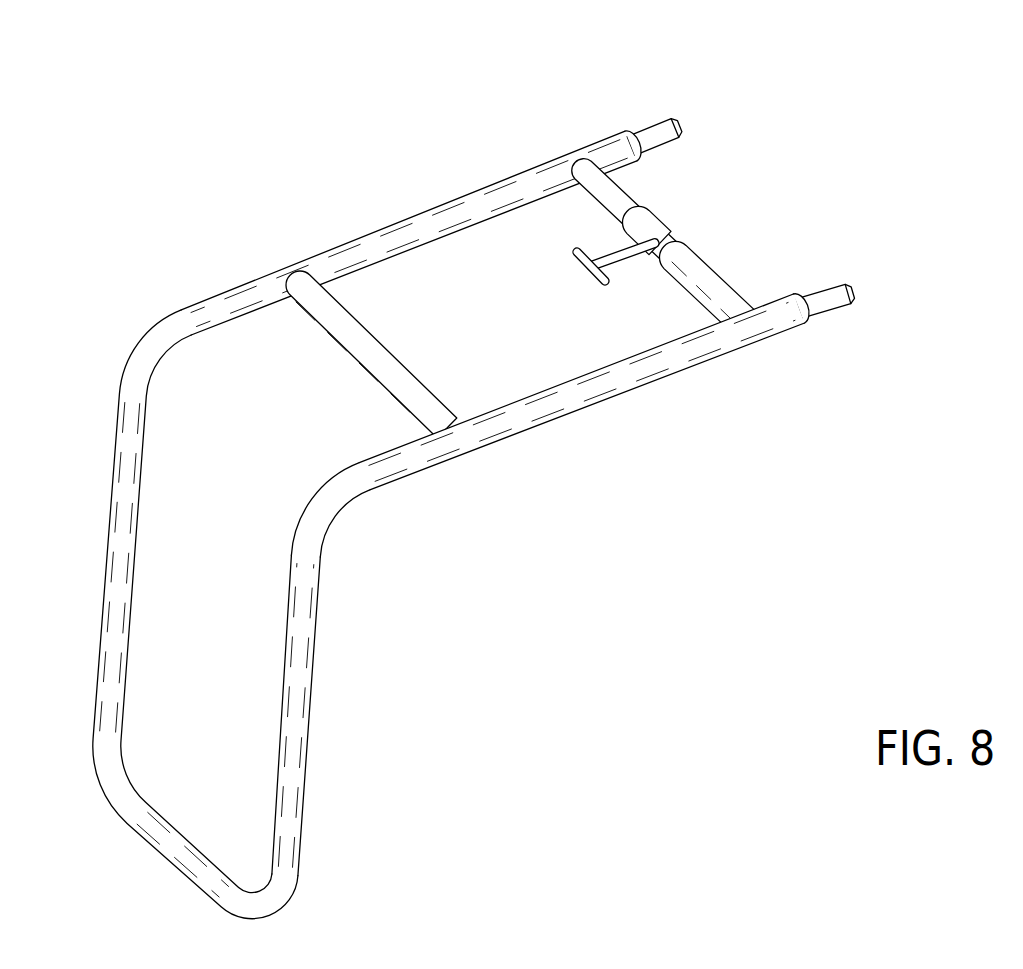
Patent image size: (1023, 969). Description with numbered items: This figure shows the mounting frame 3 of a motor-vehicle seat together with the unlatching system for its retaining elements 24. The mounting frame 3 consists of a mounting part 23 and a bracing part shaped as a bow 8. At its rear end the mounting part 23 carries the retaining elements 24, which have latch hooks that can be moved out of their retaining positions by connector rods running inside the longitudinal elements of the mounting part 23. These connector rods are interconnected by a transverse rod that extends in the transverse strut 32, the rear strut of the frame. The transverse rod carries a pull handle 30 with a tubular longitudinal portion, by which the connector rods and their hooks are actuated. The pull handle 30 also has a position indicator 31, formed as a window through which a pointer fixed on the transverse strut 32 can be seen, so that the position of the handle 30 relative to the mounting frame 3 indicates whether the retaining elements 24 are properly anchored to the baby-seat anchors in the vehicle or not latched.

The mounting frame 3 is at (456, 525).
The bow 8 is at (290, 720).
The mounting part 23 is at (560, 403).
The retaining elements 24 is at (655, 128).
The pull handle 30 is at (587, 268).
The position indicator 31 is at (627, 255).
The transverse strut 32 is at (697, 285).